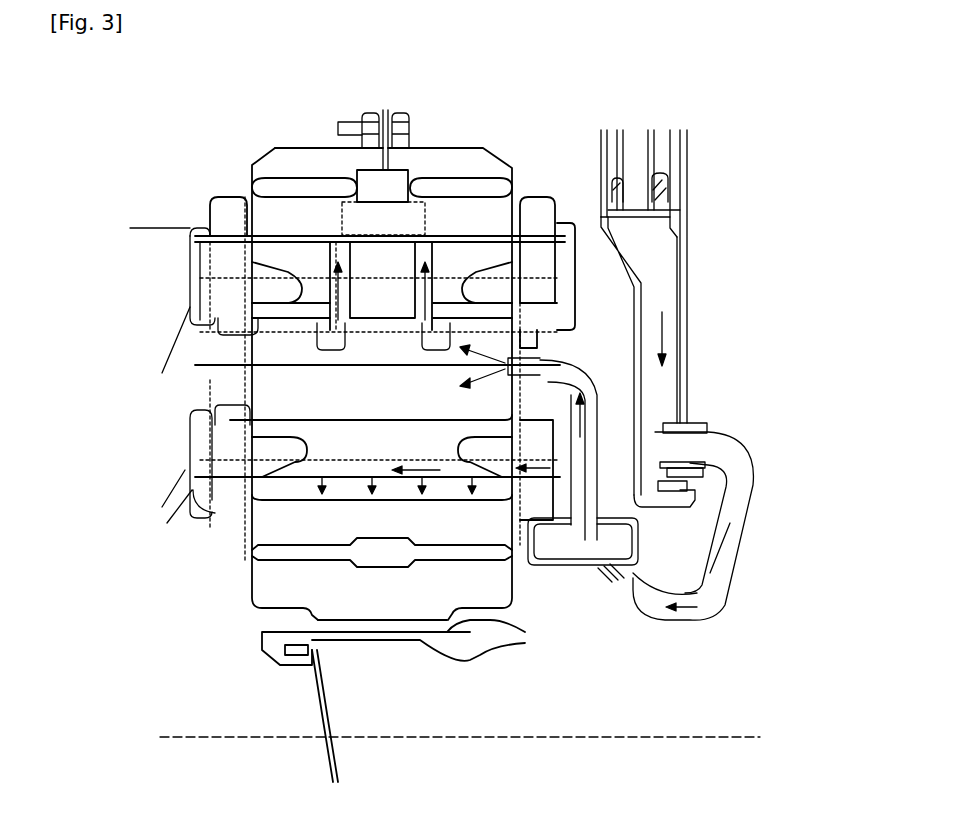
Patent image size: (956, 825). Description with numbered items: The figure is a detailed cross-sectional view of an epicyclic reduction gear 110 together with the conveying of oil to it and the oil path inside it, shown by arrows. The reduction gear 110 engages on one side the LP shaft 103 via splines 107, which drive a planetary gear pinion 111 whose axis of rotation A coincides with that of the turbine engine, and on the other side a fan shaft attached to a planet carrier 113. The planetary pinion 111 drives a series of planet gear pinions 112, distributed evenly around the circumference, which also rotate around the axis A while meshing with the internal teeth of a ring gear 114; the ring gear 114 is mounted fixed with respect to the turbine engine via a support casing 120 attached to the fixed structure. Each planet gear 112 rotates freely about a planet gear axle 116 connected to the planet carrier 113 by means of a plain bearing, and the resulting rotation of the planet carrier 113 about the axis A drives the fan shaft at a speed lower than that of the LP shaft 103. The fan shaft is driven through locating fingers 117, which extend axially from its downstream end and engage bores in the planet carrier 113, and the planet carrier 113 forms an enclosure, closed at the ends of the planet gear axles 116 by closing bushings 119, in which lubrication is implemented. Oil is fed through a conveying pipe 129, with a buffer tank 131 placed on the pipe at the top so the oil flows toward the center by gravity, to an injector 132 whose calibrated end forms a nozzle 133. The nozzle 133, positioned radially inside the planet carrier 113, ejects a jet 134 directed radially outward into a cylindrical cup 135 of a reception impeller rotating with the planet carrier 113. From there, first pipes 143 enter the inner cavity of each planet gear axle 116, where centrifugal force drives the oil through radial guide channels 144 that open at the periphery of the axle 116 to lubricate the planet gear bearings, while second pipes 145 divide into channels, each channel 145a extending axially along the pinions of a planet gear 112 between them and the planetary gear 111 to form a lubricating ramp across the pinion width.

The axis of rotation A is at (182, 737).
The LP shaft 103 is at (480, 645).
The splines 107 is at (372, 643).
The reduction gear 110 is at (224, 106).
The planetary gear pinion 111 is at (275, 578).
The planet gear pinions 112 is at (280, 527).
The planet carrier 113 is at (225, 217).
The ring gear 114 is at (490, 170).
The planet gear axle 116 is at (383, 290).
The locating fingers 117 is at (282, 230).
The closing bushing 119 is at (580, 268).
The support casing 120 is at (389, 110).
The conveying pipe 129 is at (665, 165).
The buffer tank 131 is at (660, 257).
The injector 132 is at (735, 490).
The nozzle 133 is at (622, 603).
The jet 134 is at (603, 577).
The cylindrical cup 135 is at (640, 548).
The first pipes 143 is at (600, 360).
The guide channels 144 is at (318, 345).
The second pipes 145 is at (562, 458).
The channel 145a is at (352, 456).